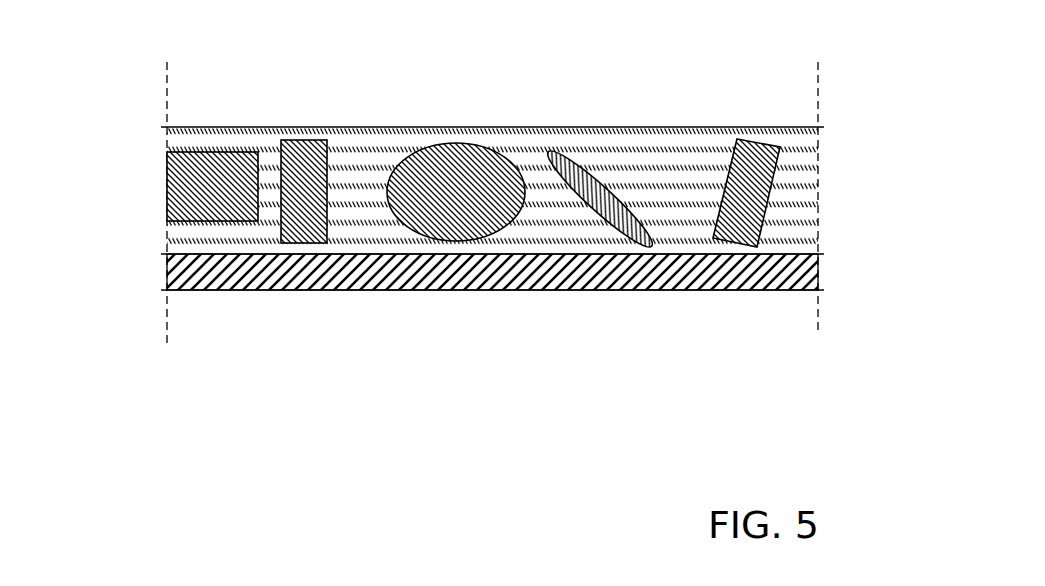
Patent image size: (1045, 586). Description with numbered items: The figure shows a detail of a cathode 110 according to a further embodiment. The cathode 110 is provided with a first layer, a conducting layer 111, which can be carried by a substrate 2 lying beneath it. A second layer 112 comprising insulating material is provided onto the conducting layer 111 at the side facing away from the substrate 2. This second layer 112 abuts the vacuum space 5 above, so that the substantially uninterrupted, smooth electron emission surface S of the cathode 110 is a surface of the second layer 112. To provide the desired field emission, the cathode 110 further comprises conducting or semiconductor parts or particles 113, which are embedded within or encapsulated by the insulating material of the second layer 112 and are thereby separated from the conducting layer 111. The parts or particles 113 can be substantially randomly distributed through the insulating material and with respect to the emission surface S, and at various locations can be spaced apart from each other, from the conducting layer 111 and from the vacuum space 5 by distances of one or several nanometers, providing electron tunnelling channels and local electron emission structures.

The cathode 110 is at (481, 215).
The conducting layer 111 is at (177, 273).
The second layer 112 is at (417, 150).
The conducting or semiconductor parts or particles 113 is at (818, 151).
The electron emission surface S is at (658, 120).
The vacuum space 5 is at (463, 85).
The substrate 2 is at (473, 343).